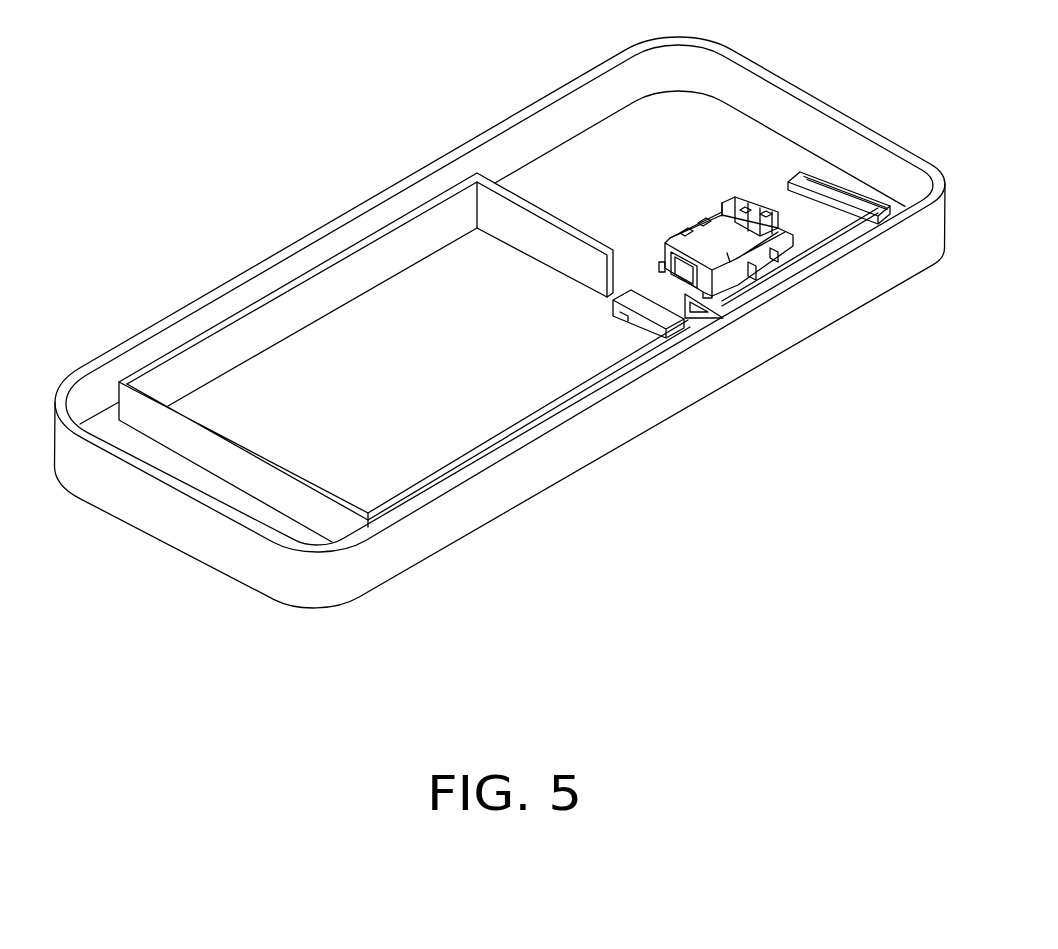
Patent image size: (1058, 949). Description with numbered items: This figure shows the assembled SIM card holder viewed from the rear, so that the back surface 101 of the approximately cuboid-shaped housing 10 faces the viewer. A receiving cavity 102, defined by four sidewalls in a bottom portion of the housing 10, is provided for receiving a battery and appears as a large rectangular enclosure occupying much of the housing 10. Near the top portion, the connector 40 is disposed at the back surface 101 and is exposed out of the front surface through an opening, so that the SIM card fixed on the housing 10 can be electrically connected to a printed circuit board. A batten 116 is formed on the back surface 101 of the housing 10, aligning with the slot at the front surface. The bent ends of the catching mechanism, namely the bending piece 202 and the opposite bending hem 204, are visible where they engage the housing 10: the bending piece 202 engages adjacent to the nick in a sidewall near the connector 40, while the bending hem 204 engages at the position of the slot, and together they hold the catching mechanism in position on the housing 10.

The housing 10 is at (758, 348).
The back surface 101 is at (645, 132).
The receiving cavity 102 is at (348, 343).
The bending piece 202 is at (653, 310).
The bending hem 204 is at (823, 177).
The batten 116 is at (885, 222).
The connector 40 is at (787, 227).